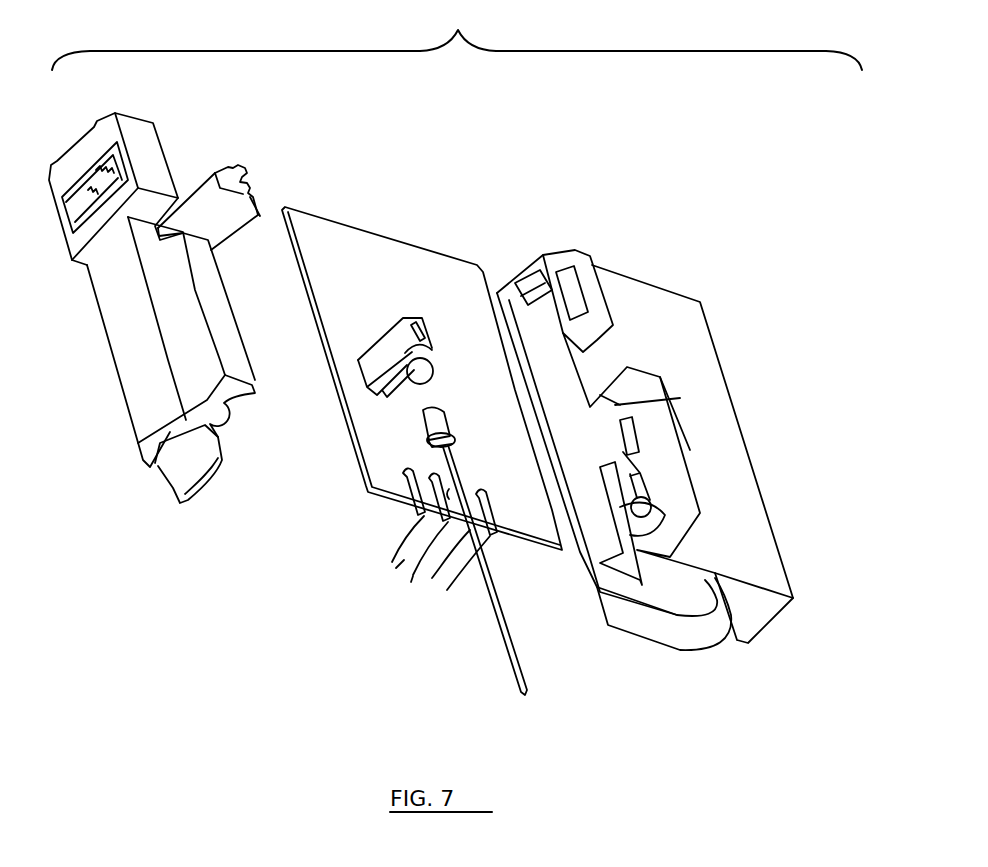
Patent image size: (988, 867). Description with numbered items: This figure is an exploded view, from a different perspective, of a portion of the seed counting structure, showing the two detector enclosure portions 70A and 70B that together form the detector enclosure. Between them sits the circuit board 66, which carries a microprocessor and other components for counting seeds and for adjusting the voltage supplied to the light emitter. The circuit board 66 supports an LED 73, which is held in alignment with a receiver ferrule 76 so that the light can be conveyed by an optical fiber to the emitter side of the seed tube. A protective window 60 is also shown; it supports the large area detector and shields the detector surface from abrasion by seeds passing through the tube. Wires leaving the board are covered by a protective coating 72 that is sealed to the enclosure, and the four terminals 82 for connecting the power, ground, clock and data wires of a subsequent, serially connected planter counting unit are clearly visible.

The protective window 60 is at (236, 165).
The circuit board 66 is at (420, 258).
The LED 73 is at (430, 360).
The receiver ferrule 76 is at (432, 430).
The terminals 82 is at (456, 594).
The protective coating 72 is at (505, 667).
The detector enclosure portion 70A is at (758, 538).
The detector enclosure portion 70B is at (150, 446).